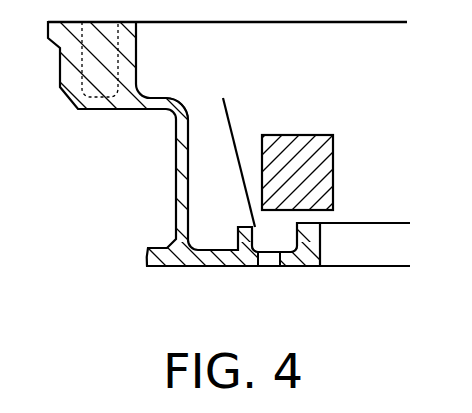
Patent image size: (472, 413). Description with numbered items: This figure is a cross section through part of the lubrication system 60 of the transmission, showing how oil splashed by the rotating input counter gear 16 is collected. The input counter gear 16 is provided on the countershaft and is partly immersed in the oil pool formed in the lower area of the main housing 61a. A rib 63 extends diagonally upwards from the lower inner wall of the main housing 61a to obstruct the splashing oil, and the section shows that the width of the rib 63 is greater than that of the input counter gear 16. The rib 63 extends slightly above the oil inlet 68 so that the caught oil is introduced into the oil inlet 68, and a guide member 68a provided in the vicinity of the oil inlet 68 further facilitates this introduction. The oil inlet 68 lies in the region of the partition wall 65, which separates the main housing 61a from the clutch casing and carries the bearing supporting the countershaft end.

The lubrication system 60 is at (244, 102).
The rib 63 is at (237, 188).
The main housing 61a is at (177, 185).
The input counter gear 16 is at (305, 135).
The guide member 68a is at (283, 238).
The oil inlet 68 is at (270, 266).
The partition wall 65 is at (227, 266).